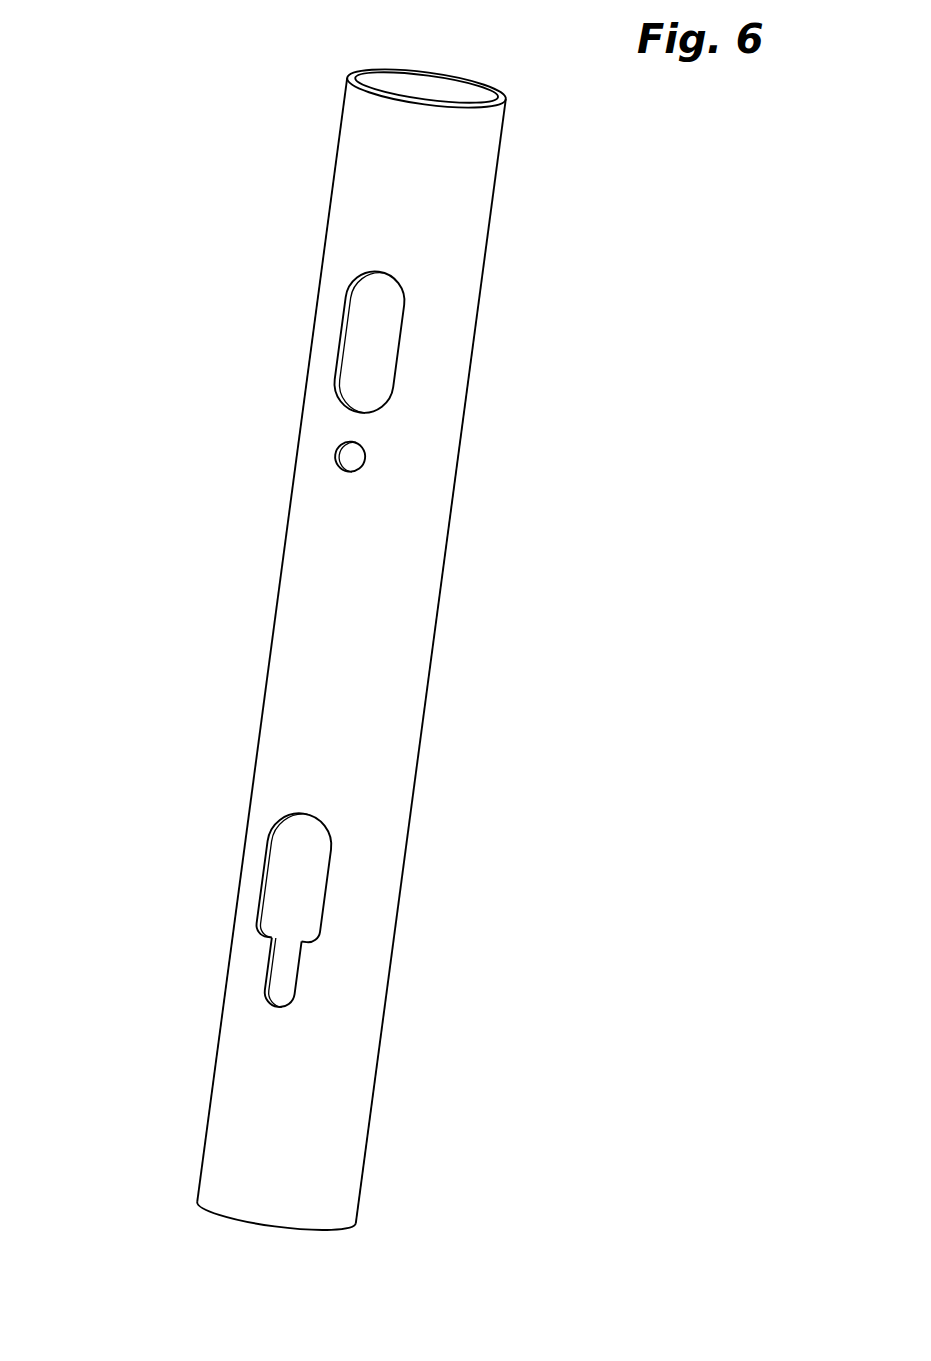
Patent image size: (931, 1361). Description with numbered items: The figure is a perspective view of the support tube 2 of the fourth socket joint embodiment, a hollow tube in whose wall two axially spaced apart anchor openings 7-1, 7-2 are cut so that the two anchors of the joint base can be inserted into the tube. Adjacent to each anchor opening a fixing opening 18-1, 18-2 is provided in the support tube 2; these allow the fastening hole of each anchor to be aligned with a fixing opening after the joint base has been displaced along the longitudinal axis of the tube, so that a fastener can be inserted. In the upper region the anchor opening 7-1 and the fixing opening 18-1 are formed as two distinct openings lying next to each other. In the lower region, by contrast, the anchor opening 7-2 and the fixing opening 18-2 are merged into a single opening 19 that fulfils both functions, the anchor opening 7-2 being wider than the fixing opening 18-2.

The support tube 2 is at (425, 617).
The anchor opening 7-1 is at (360, 358).
The fixing opening 18-1 is at (350, 460).
The anchor opening 7-2 is at (288, 887).
The fixing opening 18-2 is at (283, 980).
The single opening 19 is at (181, 905).